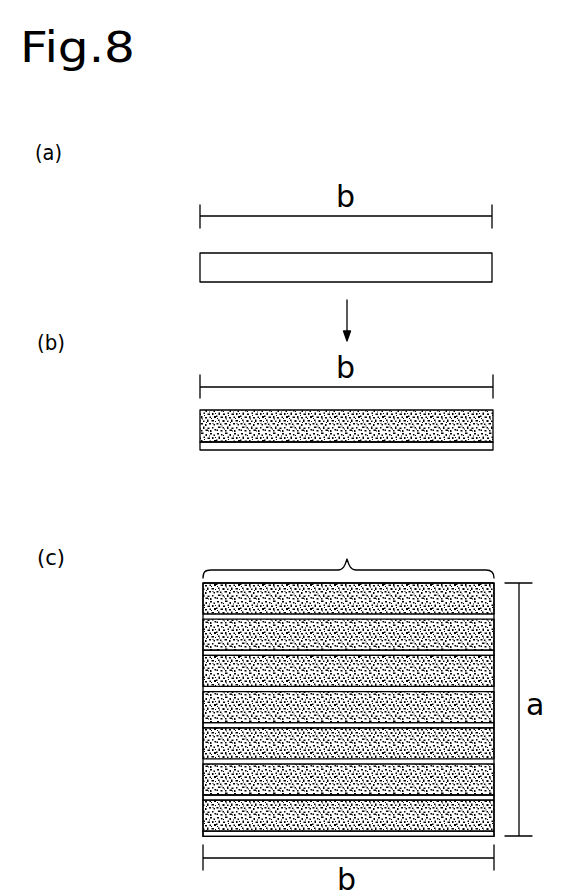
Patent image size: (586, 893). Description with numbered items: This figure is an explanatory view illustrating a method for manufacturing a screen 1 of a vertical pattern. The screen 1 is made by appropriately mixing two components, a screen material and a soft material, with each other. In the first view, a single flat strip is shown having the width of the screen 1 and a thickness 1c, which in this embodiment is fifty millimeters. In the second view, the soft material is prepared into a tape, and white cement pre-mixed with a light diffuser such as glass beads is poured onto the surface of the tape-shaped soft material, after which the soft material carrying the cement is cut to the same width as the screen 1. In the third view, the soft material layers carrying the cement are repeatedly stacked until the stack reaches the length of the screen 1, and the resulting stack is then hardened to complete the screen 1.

The screen 1 is at (348, 551).
The thickness 1c is at (215, 267).